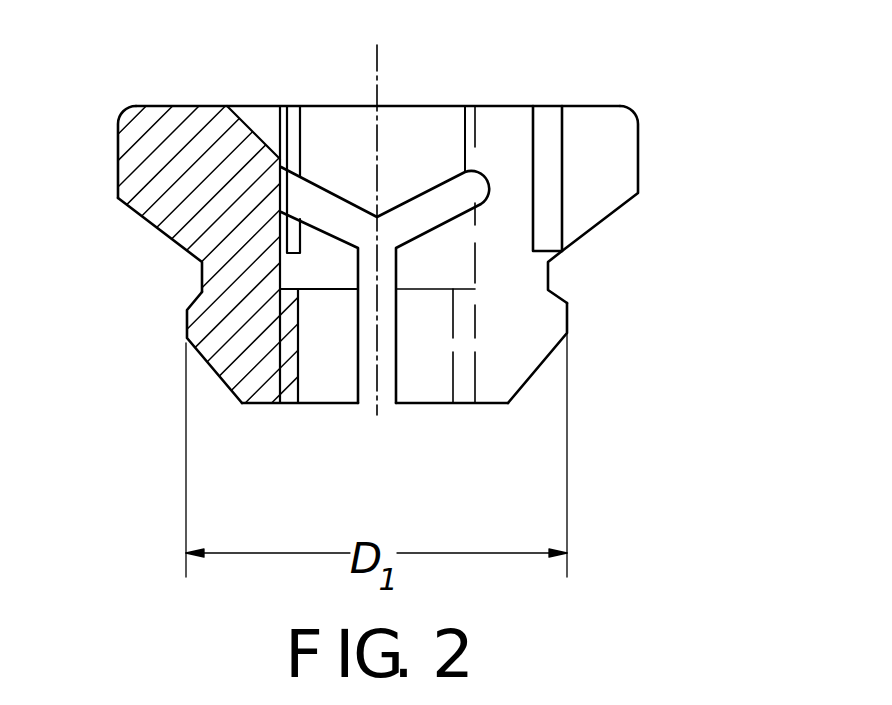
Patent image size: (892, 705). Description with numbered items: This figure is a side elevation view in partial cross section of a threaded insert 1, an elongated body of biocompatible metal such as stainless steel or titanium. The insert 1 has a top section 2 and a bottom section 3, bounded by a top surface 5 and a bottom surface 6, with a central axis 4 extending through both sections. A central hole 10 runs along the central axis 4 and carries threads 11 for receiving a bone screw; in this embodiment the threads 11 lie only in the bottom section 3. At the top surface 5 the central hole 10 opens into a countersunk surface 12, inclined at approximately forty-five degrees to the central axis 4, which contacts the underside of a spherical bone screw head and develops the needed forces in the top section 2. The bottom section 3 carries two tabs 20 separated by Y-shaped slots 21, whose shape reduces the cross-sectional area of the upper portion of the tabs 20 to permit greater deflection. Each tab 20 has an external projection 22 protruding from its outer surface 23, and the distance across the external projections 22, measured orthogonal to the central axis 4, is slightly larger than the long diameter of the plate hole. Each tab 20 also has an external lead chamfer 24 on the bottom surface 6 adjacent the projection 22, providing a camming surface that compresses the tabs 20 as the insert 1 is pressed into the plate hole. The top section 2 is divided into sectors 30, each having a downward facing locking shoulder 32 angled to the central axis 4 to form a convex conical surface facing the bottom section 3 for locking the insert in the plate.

The insert 1 is at (630, 58).
The top section 2 is at (668, 155).
The bottom section 3 is at (660, 358).
The central axis 4 is at (378, 80).
The top surface 5 is at (183, 106).
The bottom surface 6 is at (268, 403).
The central hole 10 is at (442, 95).
The threads 11 is at (300, 353).
The countersunk surface 12 is at (258, 107).
The tabs 20 is at (508, 358).
The Y-shaped slots 21 is at (377, 403).
The external projection 22 is at (567, 317).
The outer surface 23 is at (552, 275).
The external lead chamfer 24 is at (223, 380).
The sectors 30 is at (157, 170).
The locking shoulder 32 is at (167, 235).